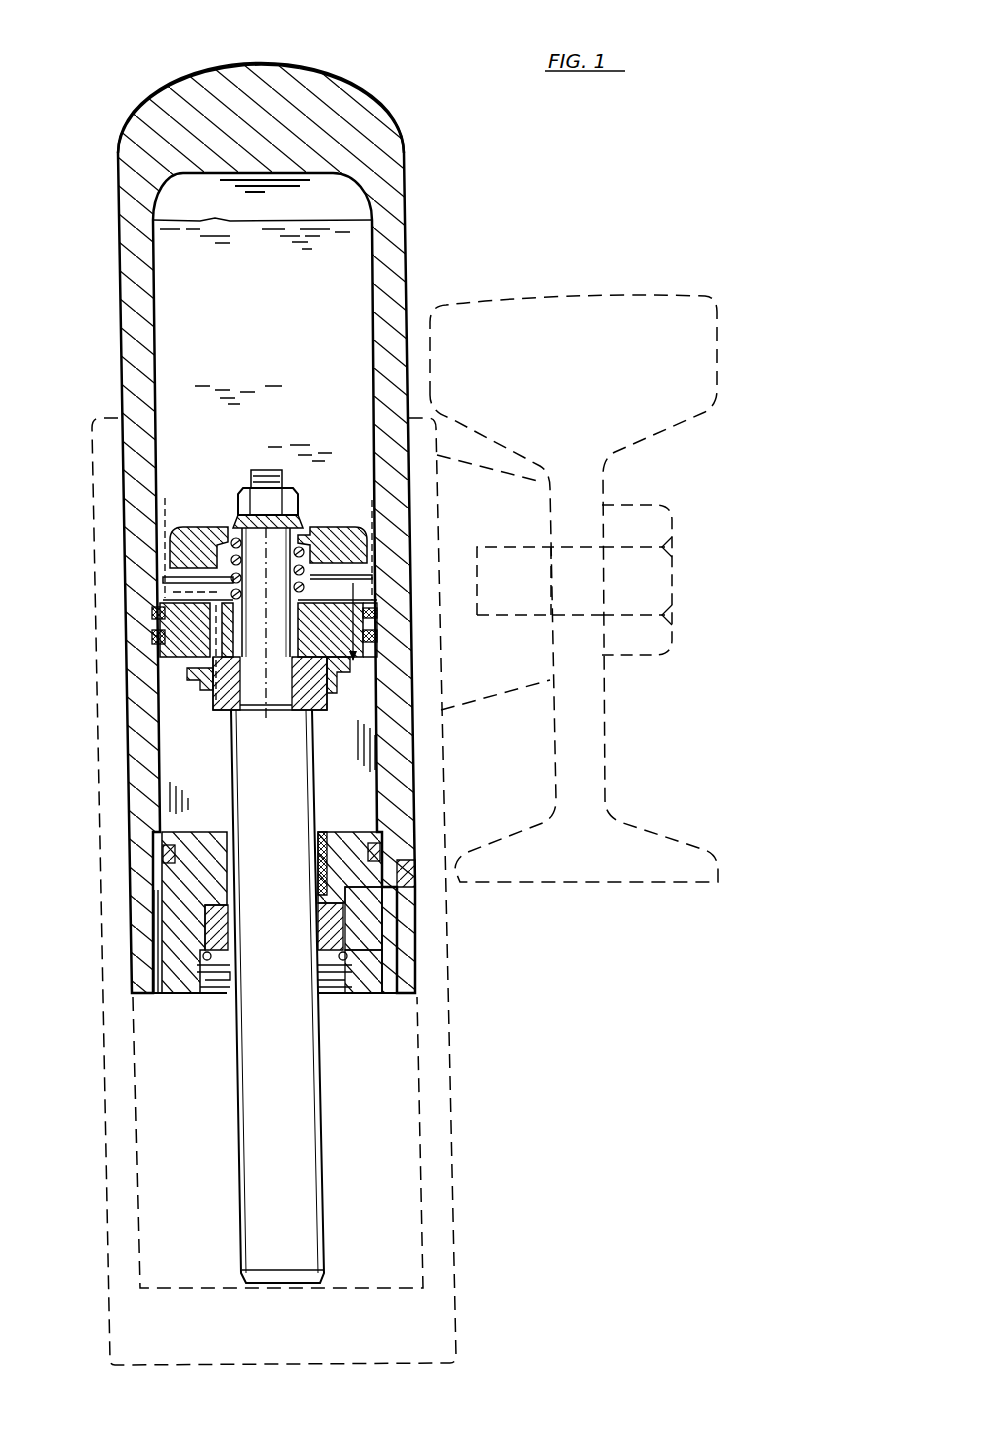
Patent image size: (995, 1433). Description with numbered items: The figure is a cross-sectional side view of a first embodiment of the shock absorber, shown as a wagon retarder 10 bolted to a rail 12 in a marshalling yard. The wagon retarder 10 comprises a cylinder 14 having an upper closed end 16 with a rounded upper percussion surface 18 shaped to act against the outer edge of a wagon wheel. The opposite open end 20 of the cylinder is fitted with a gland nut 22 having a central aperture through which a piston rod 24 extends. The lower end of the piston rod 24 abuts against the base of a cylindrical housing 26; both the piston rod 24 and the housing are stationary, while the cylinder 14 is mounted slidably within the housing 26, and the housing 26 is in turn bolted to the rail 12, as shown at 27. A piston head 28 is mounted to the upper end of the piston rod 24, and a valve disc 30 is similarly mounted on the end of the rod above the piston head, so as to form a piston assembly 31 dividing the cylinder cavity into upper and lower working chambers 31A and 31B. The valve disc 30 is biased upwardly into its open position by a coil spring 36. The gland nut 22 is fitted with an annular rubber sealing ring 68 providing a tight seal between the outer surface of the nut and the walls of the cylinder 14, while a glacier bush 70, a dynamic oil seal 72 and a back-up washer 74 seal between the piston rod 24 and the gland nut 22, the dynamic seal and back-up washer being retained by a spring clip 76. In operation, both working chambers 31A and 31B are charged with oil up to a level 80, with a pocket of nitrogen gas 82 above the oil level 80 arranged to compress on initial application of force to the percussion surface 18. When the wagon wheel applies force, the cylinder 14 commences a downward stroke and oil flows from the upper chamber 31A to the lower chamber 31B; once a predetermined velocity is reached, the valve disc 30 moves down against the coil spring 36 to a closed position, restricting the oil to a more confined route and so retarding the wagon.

The wagon retarder 10 is at (420, 238).
The rail 12 is at (605, 293).
The cylinder 14 is at (127, 260).
The upper closed end 16 is at (367, 100).
The rounded upper percussion surface 18 is at (190, 64).
The open end 20 is at (195, 1005).
The gland nut 22 is at (178, 962).
The piston rod 24 is at (300, 1186).
The cylindrical housing 26 is at (447, 1190).
The bolting of housing to rail 27 is at (508, 642).
The piston head 28 is at (203, 636).
The valve disc 30 is at (197, 528).
The piston assembly 31 is at (148, 638).
The upper working chamber 31A is at (297, 336).
The lower working chamber 31B is at (213, 695).
The coil spring 36 is at (325, 560).
The annular rubber sealing ring 68 is at (413, 863).
The glacier bush 70 is at (332, 840).
The dynamic oil seal 72 is at (345, 918).
The back-up washer 74 is at (352, 953).
The spring clip 76 is at (390, 993).
The oil level 80 is at (350, 201).
The pocket of nitrogen gas 82 is at (200, 197).